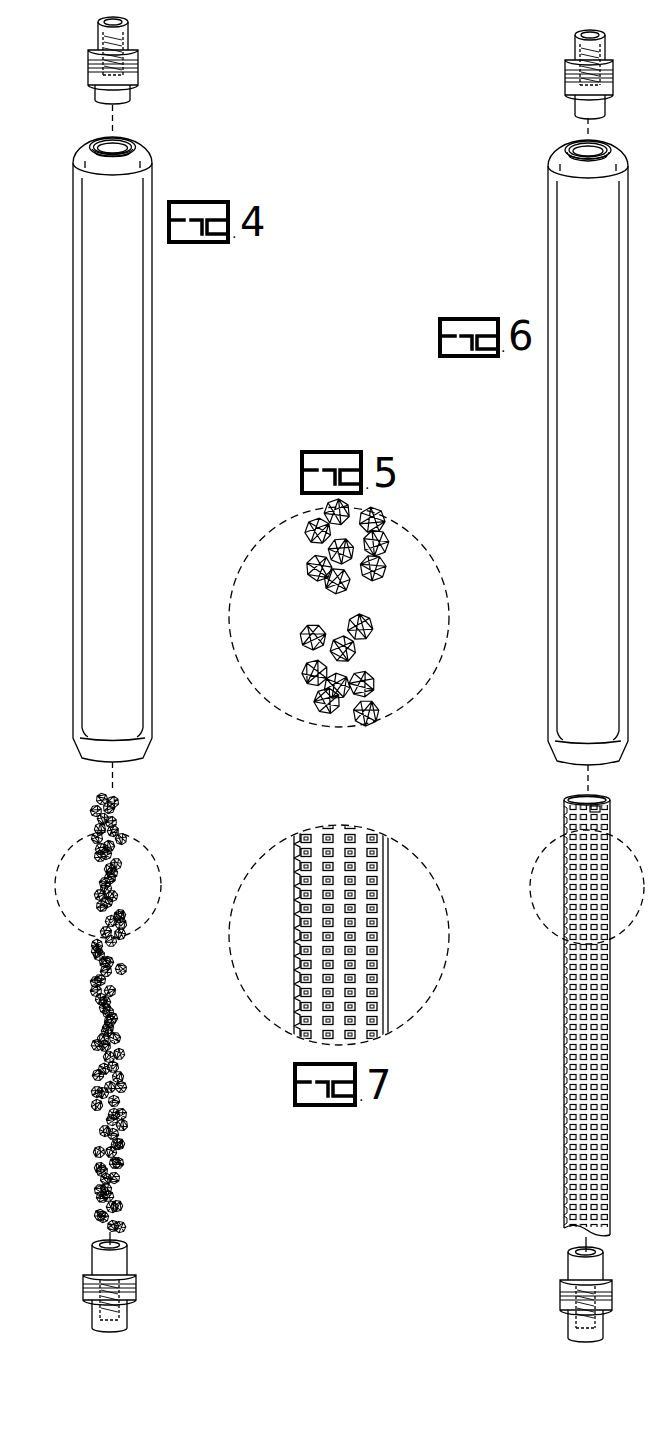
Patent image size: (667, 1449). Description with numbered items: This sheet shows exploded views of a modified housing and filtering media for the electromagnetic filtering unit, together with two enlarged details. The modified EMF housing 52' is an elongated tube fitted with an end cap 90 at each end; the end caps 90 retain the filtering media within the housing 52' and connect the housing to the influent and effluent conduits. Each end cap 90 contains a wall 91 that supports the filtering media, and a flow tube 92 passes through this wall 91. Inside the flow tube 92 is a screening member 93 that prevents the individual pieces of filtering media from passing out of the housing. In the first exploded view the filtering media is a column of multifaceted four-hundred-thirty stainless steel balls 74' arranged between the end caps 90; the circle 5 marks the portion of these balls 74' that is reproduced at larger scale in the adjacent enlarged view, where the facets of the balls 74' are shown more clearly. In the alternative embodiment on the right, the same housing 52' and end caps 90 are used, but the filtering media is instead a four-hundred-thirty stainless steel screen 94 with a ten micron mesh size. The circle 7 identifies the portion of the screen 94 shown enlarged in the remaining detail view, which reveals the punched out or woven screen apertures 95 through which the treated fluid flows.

In FIG. 4, the circle 5 is at (60, 848).
In FIG. 6, the circle 7 is at (543, 848).
In FIG. 4, the modified EMF housing 52' is at (136, 449).
In FIG. 6, the modified EMF housing 52' is at (569, 452).
In FIG. 4, the multifaceted stainless steel balls 74' is at (134, 1012).
In FIG. 5, the multifaceted stainless steel balls 74' is at (308, 613).
In FIG. 4, the end cap 90 is at (152, 672).
In FIG. 6, the end cap 90 is at (562, 102).
In FIG. 4, the wall 91 is at (138, 56).
In FIG. 4, the flow tube 92 is at (130, 31).
In FIG. 4, the screening member 93 is at (100, 45).
In FIG. 6, the stainless steel screen 94 is at (566, 1015).
In FIG. 6, the screen apertures 95 is at (564, 918).
In FIG. 7, the screen apertures 95 is at (384, 870).